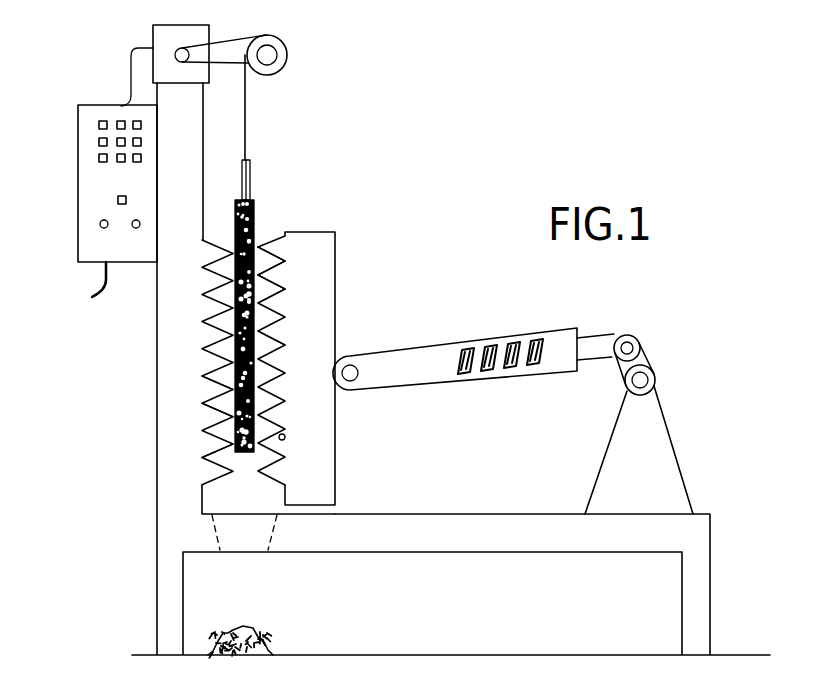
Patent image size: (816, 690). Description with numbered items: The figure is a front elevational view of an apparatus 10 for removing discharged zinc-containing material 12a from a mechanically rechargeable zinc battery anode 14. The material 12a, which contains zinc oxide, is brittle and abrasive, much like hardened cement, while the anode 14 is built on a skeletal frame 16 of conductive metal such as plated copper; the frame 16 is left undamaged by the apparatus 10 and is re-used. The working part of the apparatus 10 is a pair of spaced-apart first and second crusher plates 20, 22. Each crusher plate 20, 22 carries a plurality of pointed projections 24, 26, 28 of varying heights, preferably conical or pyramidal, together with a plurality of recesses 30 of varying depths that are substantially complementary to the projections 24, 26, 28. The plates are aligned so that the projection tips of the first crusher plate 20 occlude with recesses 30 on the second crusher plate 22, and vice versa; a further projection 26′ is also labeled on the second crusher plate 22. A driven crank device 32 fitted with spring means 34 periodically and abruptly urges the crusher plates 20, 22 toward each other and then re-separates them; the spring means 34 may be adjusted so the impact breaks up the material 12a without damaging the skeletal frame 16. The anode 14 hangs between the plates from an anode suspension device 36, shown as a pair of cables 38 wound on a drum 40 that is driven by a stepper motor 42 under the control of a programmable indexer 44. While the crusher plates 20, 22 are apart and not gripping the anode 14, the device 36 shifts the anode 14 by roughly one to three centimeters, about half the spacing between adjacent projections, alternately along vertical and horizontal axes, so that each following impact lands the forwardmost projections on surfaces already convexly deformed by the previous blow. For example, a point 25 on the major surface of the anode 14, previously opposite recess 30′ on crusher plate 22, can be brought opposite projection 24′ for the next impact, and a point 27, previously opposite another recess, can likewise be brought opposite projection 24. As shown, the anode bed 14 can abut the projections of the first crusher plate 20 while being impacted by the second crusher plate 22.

The apparatus 10 is at (712, 630).
The discharged zinc-containing material 12a is at (272, 643).
The zinc battery anode 14 is at (270, 193).
The skeletal frame 16 is at (250, 176).
The first crusher plate 20 is at (203, 494).
The second crusher plate 22 is at (290, 498).
The pointed projection 24 is at (204, 343).
The projection 24′ is at (262, 247).
The point on anode major surface 25 is at (265, 249).
The pointed projection 26 is at (204, 374).
The bellows element 26′ is at (280, 270).
The point on anode major surface 27 is at (262, 332).
The pointed projection 28 is at (204, 404).
The recess 30 is at (204, 448).
The recess 30′ is at (270, 264).
The driven crank device 32 is at (627, 336).
The spring means 34 is at (502, 345).
The anode suspension device 36 is at (312, 86).
The cable 38 is at (247, 125).
The drum 40 is at (284, 57).
The stepper motor 42 is at (153, 38).
The programmable indexer 44 is at (80, 194).